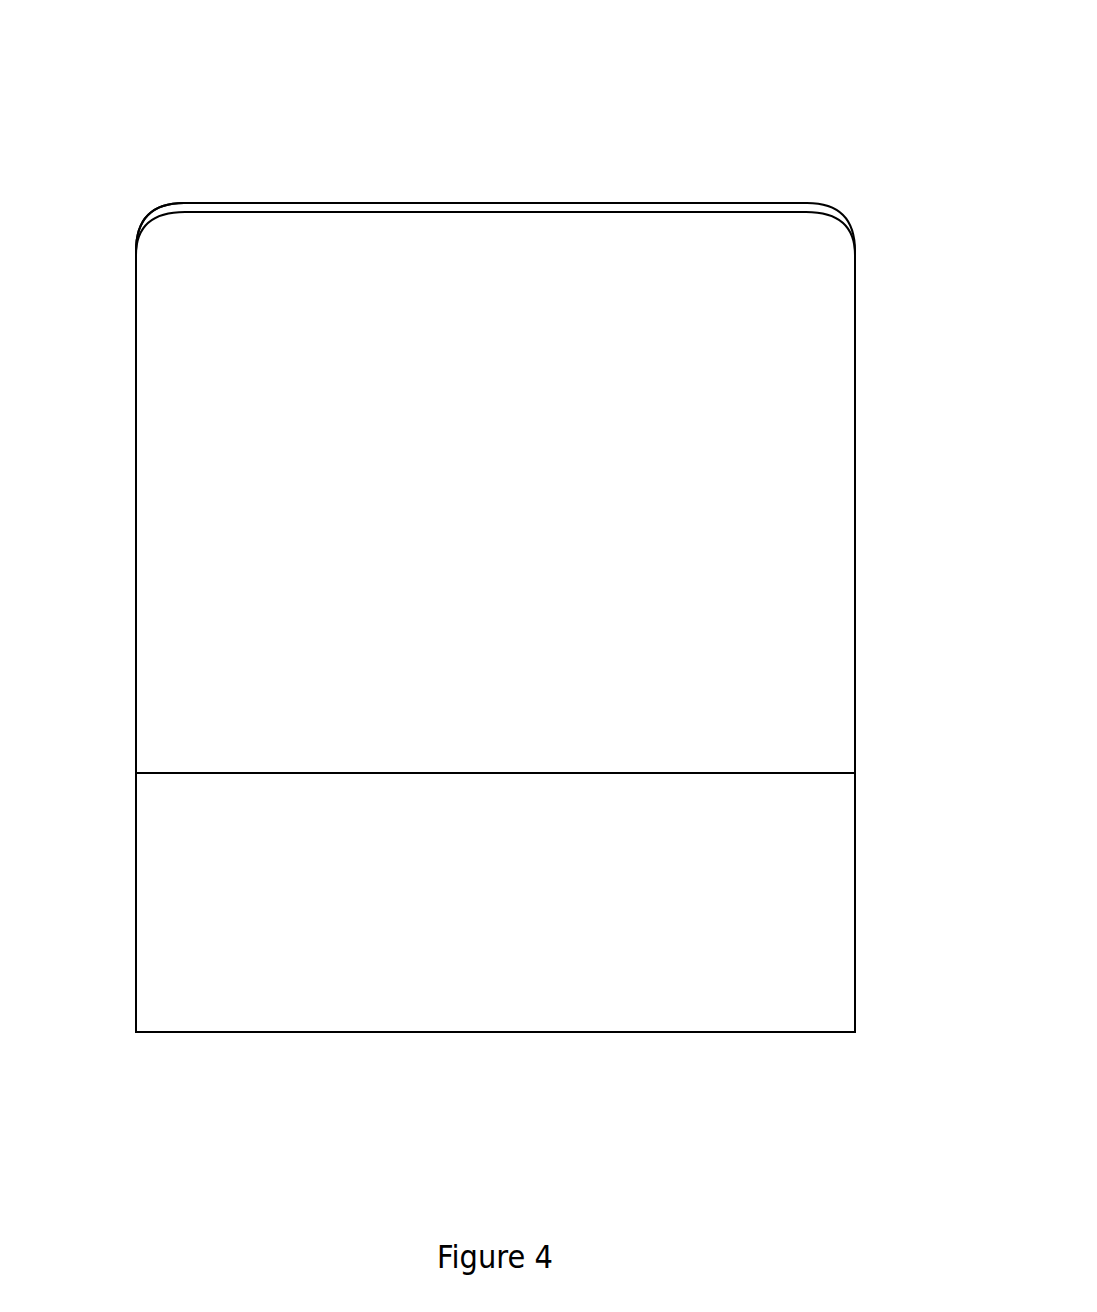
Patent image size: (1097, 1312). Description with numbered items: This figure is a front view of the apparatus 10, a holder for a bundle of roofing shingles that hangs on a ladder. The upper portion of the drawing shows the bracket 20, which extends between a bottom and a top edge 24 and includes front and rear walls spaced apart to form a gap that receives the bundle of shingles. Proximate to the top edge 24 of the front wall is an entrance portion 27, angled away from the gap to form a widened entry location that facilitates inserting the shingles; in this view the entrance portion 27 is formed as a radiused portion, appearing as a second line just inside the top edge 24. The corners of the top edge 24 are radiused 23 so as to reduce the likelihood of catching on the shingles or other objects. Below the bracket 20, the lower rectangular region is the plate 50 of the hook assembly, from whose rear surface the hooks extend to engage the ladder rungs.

The portable electronic device 10 is at (501, 521).
The bracket 20 is at (857, 449).
The radiused corner 23 is at (205, 290).
The top edge 24 is at (576, 202).
The entrance portion 27 is at (470, 230).
The plate 50 is at (185, 895).